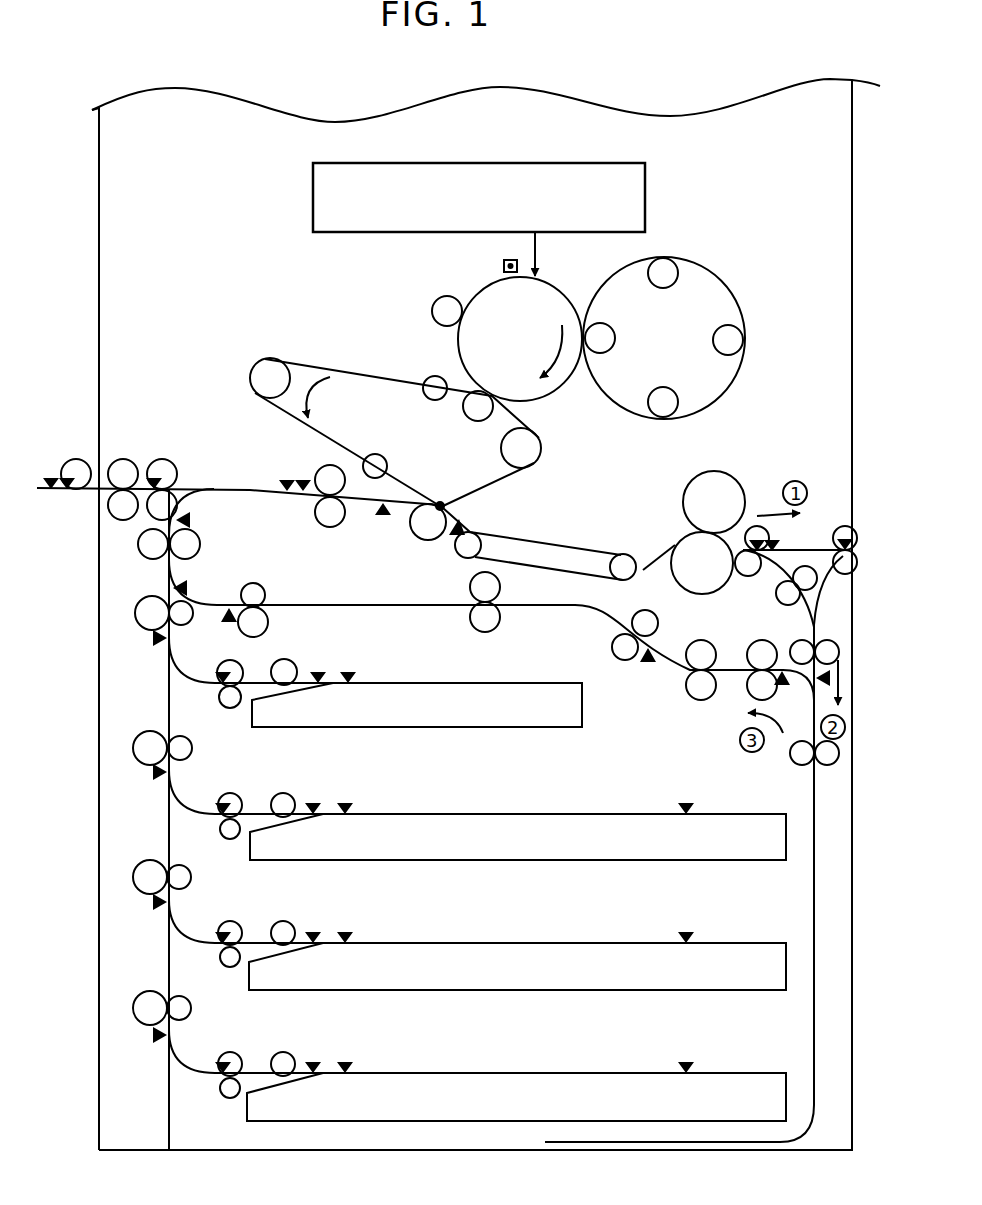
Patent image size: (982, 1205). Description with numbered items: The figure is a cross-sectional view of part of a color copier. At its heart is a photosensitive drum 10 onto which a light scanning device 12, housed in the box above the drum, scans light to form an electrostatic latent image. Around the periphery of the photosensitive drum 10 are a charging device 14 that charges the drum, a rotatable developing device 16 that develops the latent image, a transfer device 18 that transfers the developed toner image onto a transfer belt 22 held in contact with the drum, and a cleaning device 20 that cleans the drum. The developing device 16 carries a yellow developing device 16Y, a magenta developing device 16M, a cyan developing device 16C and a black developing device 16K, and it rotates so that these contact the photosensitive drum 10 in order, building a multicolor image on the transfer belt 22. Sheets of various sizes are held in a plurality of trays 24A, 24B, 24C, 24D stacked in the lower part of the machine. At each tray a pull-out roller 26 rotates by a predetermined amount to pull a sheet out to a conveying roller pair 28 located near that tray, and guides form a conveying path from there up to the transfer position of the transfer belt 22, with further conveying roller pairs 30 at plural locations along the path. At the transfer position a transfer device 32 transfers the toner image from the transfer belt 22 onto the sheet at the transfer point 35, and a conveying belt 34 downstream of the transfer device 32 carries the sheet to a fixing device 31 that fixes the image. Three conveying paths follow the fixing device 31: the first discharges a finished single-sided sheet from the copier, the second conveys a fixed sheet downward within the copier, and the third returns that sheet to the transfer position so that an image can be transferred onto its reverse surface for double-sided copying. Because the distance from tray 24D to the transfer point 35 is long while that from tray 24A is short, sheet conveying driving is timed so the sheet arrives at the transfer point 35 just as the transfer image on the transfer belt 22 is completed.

The photosensitive drum 10 is at (560, 388).
The light scanning device 12 is at (647, 184).
The charging device 14 is at (502, 266).
The developing device 16 is at (712, 257).
The yellow developing device 16Y is at (615, 341).
The magenta developing device 16M is at (678, 279).
The cyan developing device 16C is at (713, 343).
The black developing device 16K is at (678, 402).
The transfer device 18 is at (467, 417).
The cleaning device 20 is at (432, 305).
The transfer belt 22 is at (328, 360).
The tray 24A is at (583, 713).
The tray 24B is at (545, 812).
The tray 24C is at (555, 943).
The tray 24D is at (568, 1073).
The pull-out roller 26 is at (80, 458).
The conveying roller pair 28 is at (128, 455).
The conveying roller pair 30 is at (172, 455).
The fixing device 31 is at (738, 478).
The transfer device 32 is at (428, 480).
The conveying belt 34 is at (473, 562).
The transfer point 35 is at (445, 508).